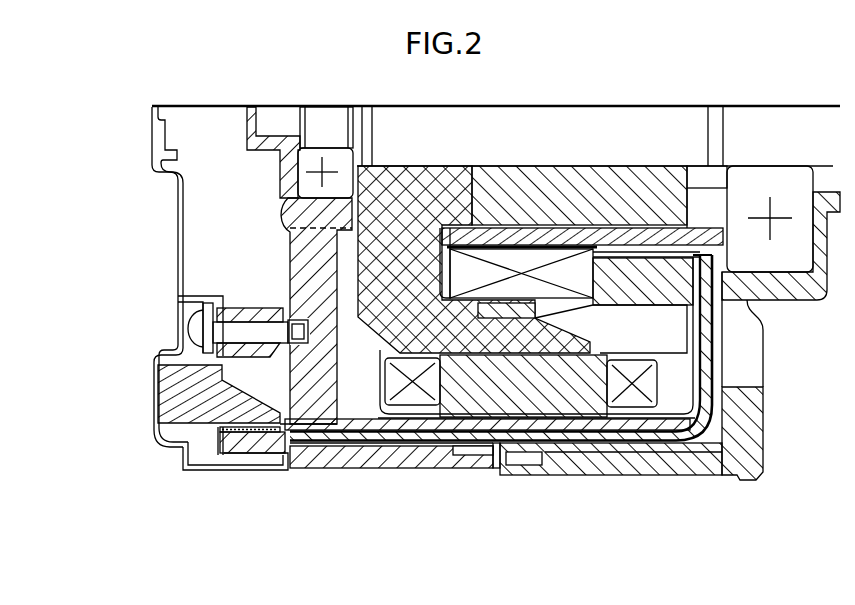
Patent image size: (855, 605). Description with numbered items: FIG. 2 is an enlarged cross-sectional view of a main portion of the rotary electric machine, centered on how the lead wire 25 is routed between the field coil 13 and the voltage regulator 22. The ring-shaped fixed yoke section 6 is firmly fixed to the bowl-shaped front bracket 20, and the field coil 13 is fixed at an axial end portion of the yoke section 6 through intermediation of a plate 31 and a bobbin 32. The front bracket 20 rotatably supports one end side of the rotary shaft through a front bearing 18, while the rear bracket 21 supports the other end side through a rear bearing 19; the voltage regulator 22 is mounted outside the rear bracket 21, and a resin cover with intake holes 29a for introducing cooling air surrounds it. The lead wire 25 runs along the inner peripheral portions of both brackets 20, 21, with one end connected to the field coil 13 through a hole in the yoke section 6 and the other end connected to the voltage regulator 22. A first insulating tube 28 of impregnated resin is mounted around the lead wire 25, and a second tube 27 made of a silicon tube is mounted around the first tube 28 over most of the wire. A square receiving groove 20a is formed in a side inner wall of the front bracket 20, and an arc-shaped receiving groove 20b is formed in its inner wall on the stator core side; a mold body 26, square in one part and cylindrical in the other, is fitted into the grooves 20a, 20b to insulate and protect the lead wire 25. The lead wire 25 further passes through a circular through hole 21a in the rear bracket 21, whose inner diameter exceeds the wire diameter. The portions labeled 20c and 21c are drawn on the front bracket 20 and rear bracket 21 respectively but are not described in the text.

The intake holes 29a is at (177, 242).
The rear bearing 19 is at (303, 182).
The plate 31 is at (442, 225).
The bobbin 32 is at (487, 240).
The field coil 13 is at (540, 275).
The fixed yoke section 6 is at (610, 272).
The front bearing 18 is at (783, 203).
The housing projection 20c is at (763, 318).
The receiving groove 20a is at (713, 372).
The front bracket 20 is at (687, 467).
The receiving groove 20b is at (615, 452).
The lead wire 25 is at (541, 450).
The mold body 26 is at (497, 455).
The second tube 27 is at (423, 441).
The through hole 21a is at (377, 442).
The rear bracket 21 is at (322, 447).
The first insulating tube 28 is at (263, 443).
The voltage regulator 22 is at (181, 470).
The base plate flange 21c is at (228, 350).